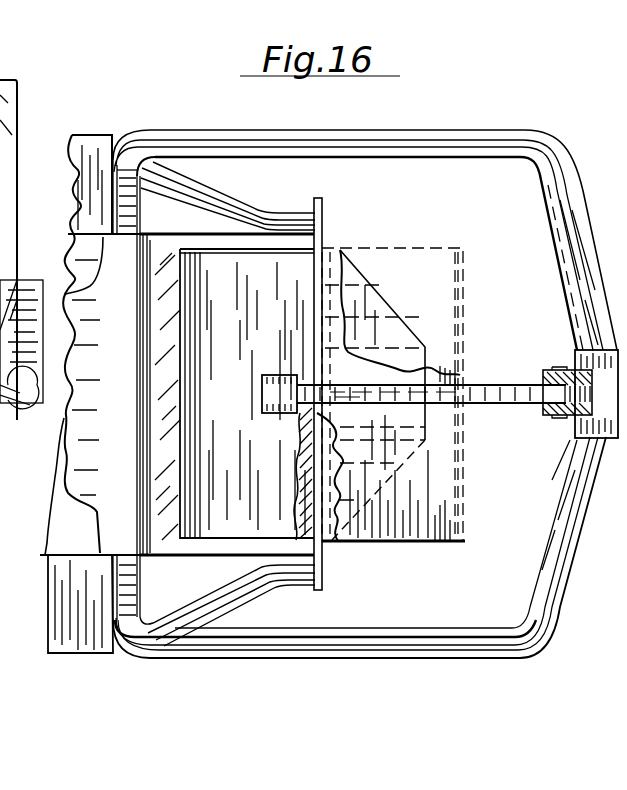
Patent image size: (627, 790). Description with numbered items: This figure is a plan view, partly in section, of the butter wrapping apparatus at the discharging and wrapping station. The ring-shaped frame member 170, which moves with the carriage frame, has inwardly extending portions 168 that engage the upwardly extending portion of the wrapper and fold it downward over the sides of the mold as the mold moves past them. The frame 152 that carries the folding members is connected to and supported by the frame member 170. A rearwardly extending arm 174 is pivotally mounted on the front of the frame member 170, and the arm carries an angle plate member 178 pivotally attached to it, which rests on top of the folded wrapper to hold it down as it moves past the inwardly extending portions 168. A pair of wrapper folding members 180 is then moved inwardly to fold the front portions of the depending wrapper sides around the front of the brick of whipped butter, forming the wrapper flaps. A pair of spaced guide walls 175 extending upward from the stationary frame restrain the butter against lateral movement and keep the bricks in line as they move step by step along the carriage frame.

The frame 152 is at (0, 80).
The inwardly extending portions 168 is at (367, 375).
The ring-shaped frame member 170 is at (484, 125).
The rearwardly extending arm 174 is at (497, 383).
The guide walls 175 is at (170, 232).
The angle plate member 178 is at (270, 324).
The wrapper folding members 180 is at (325, 203).